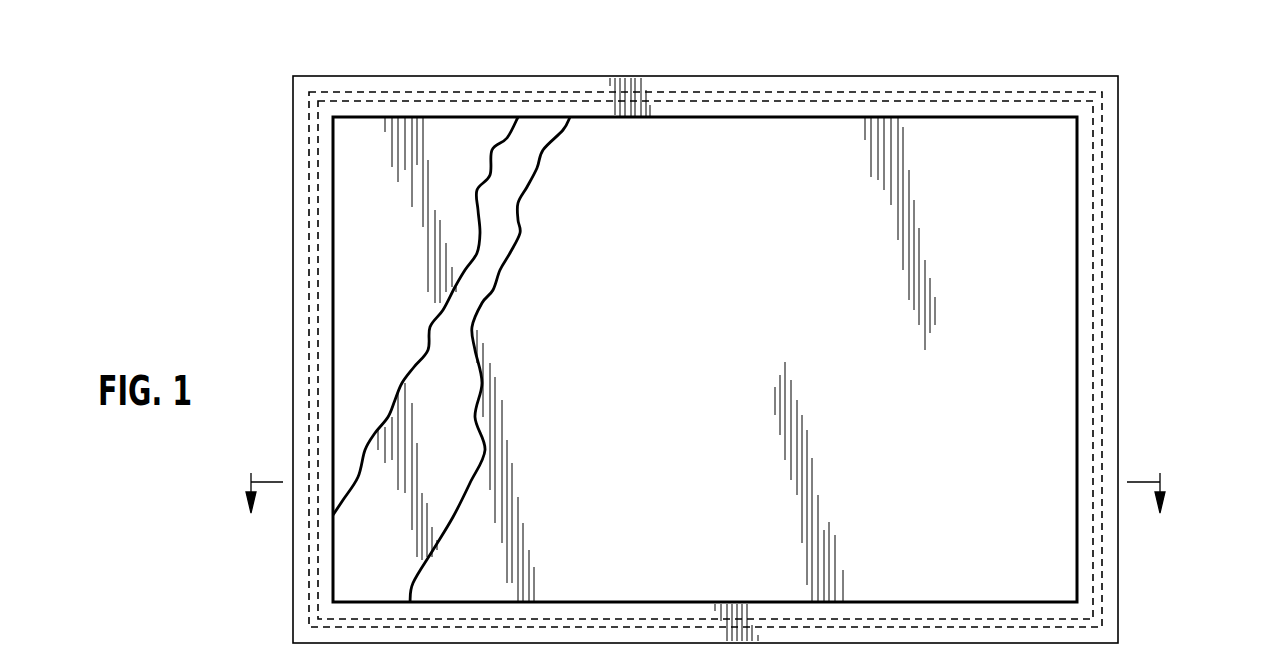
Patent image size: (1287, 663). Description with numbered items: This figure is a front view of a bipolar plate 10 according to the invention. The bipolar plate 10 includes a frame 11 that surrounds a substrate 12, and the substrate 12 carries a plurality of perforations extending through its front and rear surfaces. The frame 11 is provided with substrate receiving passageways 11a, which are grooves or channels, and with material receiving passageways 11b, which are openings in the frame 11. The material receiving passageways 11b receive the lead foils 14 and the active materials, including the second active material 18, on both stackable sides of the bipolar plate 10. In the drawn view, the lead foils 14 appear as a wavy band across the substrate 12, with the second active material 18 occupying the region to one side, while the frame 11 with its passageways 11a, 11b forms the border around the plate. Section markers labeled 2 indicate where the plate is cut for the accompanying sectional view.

The bipolar plate 10 is at (1145, 78).
The frame 11 is at (1118, 257).
The substrate receiving passageways 11a is at (498, 92).
The material receiving passageways 11b is at (1043, 175).
The substrate 12 is at (740, 293).
The lead foils 14 is at (453, 423).
The second active material 18 is at (384, 228).
The section line 2 is at (705, 512).